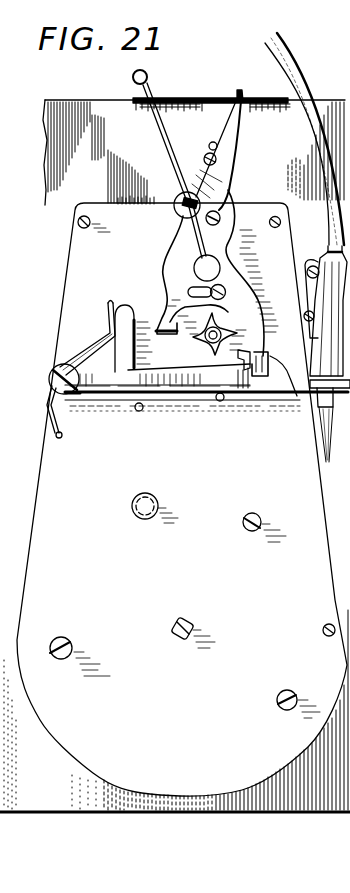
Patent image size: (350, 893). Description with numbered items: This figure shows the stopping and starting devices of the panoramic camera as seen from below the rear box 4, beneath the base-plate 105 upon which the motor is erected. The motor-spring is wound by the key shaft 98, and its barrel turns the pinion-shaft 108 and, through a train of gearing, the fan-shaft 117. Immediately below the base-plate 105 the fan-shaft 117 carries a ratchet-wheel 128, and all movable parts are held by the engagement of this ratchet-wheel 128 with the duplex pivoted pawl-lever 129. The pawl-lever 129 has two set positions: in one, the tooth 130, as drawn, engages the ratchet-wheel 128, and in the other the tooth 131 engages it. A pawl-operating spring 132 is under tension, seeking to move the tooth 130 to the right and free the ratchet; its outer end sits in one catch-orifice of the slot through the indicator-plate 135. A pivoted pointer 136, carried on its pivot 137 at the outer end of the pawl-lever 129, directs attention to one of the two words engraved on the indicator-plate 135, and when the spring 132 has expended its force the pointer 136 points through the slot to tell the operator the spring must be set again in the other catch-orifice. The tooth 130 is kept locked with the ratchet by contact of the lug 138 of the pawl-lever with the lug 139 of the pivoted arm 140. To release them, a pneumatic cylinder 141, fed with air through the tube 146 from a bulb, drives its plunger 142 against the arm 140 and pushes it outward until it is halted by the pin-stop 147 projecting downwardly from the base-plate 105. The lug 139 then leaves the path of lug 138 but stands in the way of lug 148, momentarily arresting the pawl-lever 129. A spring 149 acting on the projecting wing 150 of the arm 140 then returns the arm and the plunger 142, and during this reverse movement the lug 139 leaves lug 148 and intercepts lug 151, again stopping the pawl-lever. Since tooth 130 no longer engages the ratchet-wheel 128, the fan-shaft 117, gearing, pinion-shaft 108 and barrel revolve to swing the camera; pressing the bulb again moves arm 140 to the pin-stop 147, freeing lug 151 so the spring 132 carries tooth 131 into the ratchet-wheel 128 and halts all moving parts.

The rear box 4 is at (56, 152).
The key shaft 98 is at (186, 622).
The base-plate 105 is at (182, 499).
The pinion-shaft 108 is at (150, 503).
The fan-shaft 117 is at (236, 332).
The ratchet-wheel 128 is at (207, 340).
The duplex pivoted pawl-lever 129 is at (170, 252).
The tooth 130 is at (252, 350).
The tooth 131 is at (160, 326).
The pawl-operating spring 132 is at (170, 150).
The indicator-plate 135 is at (170, 96).
The pivoted pointer 136 is at (239, 90).
The pivot 137 is at (216, 160).
The lug 138 is at (265, 380).
The lug 139 is at (280, 362).
The pivoted arm 140 is at (108, 386).
The pneumatic cylinder 141 is at (322, 266).
The plunger 142 is at (330, 420).
The tube 146 is at (298, 76).
The pin-stop 147 is at (222, 402).
The lug 148 is at (262, 400).
The spring 149 is at (66, 356).
The projecting wing 150 is at (108, 318).
The lug 151 is at (215, 368).